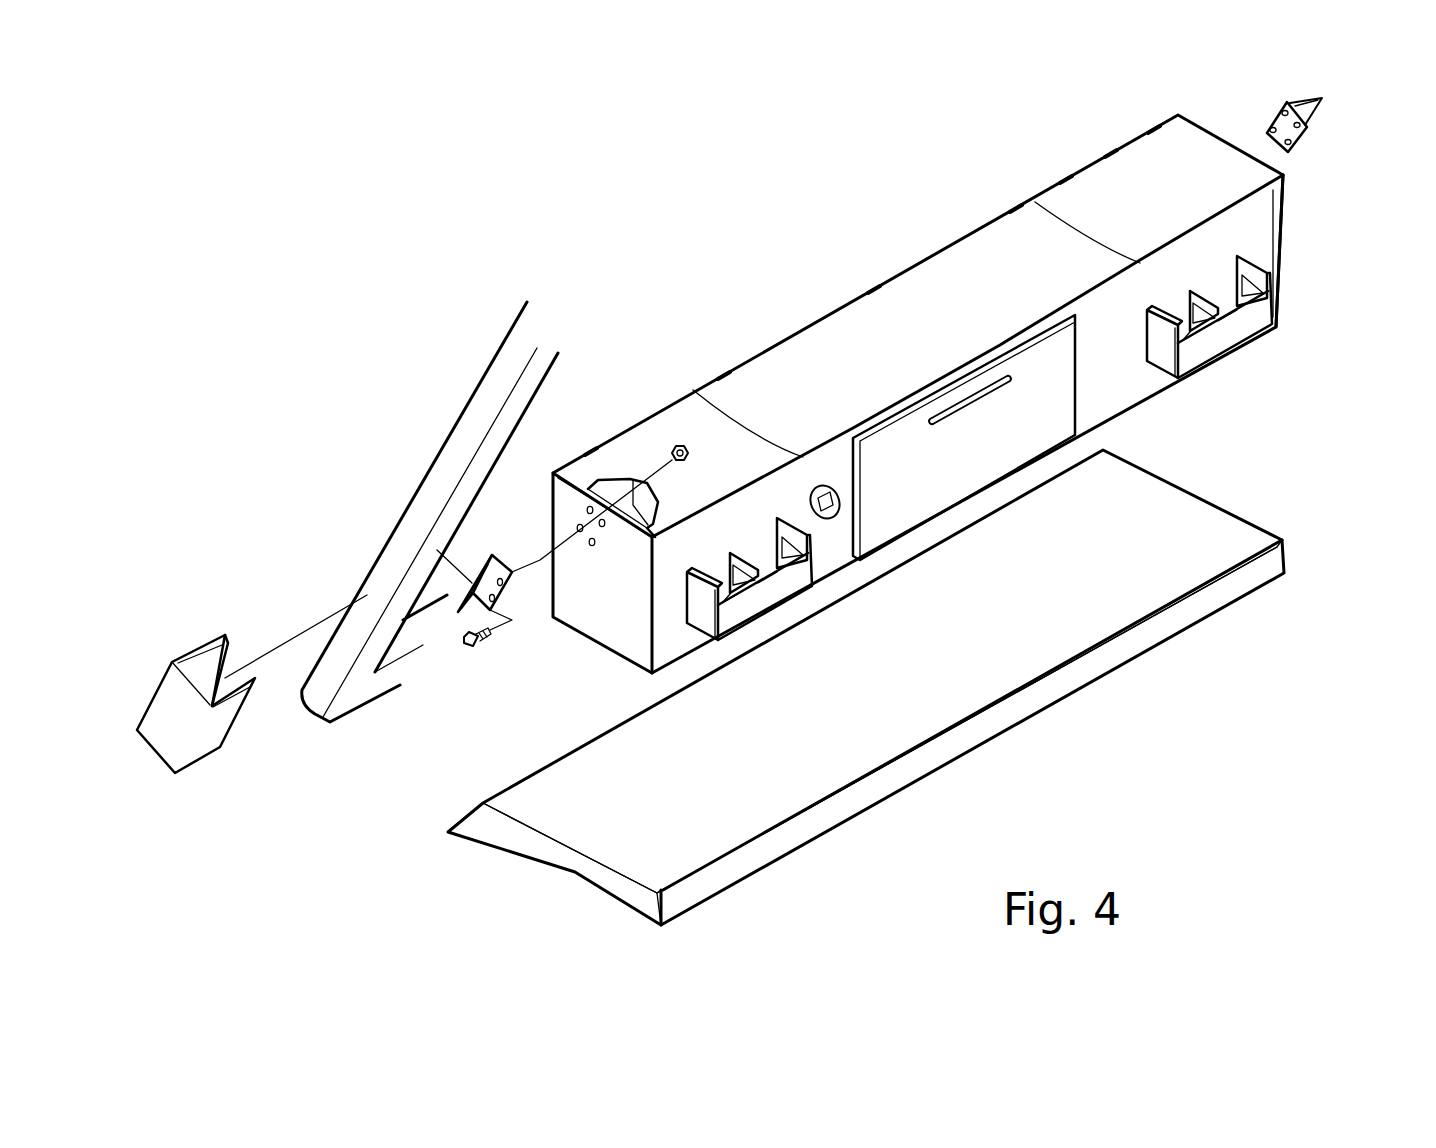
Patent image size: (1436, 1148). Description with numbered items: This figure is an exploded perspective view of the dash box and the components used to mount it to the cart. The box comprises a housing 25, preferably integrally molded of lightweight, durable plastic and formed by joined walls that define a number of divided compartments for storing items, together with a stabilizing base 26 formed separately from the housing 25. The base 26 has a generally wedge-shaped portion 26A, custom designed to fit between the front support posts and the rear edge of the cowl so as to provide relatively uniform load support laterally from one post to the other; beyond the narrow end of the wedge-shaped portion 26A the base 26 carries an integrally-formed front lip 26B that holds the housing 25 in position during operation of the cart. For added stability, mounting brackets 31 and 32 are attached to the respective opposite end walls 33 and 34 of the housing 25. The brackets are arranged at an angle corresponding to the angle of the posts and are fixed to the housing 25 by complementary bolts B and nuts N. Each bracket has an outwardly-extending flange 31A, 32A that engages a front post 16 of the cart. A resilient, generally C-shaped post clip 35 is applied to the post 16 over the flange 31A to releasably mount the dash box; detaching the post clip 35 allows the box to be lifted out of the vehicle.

The front post 16 is at (428, 482).
The housing 25 is at (822, 355).
The stabilizing base 26 is at (840, 722).
The wedge-shaped portion 26A is at (492, 835).
The front lip 26B is at (965, 745).
The mounting bracket 31 is at (505, 556).
The outwardly-extending flange 31A is at (458, 597).
The mounting bracket 32 is at (1267, 123).
The outwardly-extending flange 32A is at (1322, 113).
The end wall 33 is at (600, 608).
The end wall 34 is at (1278, 232).
The post clip 35 is at (162, 713).
The nut N is at (682, 443).
The bolt B is at (485, 650).